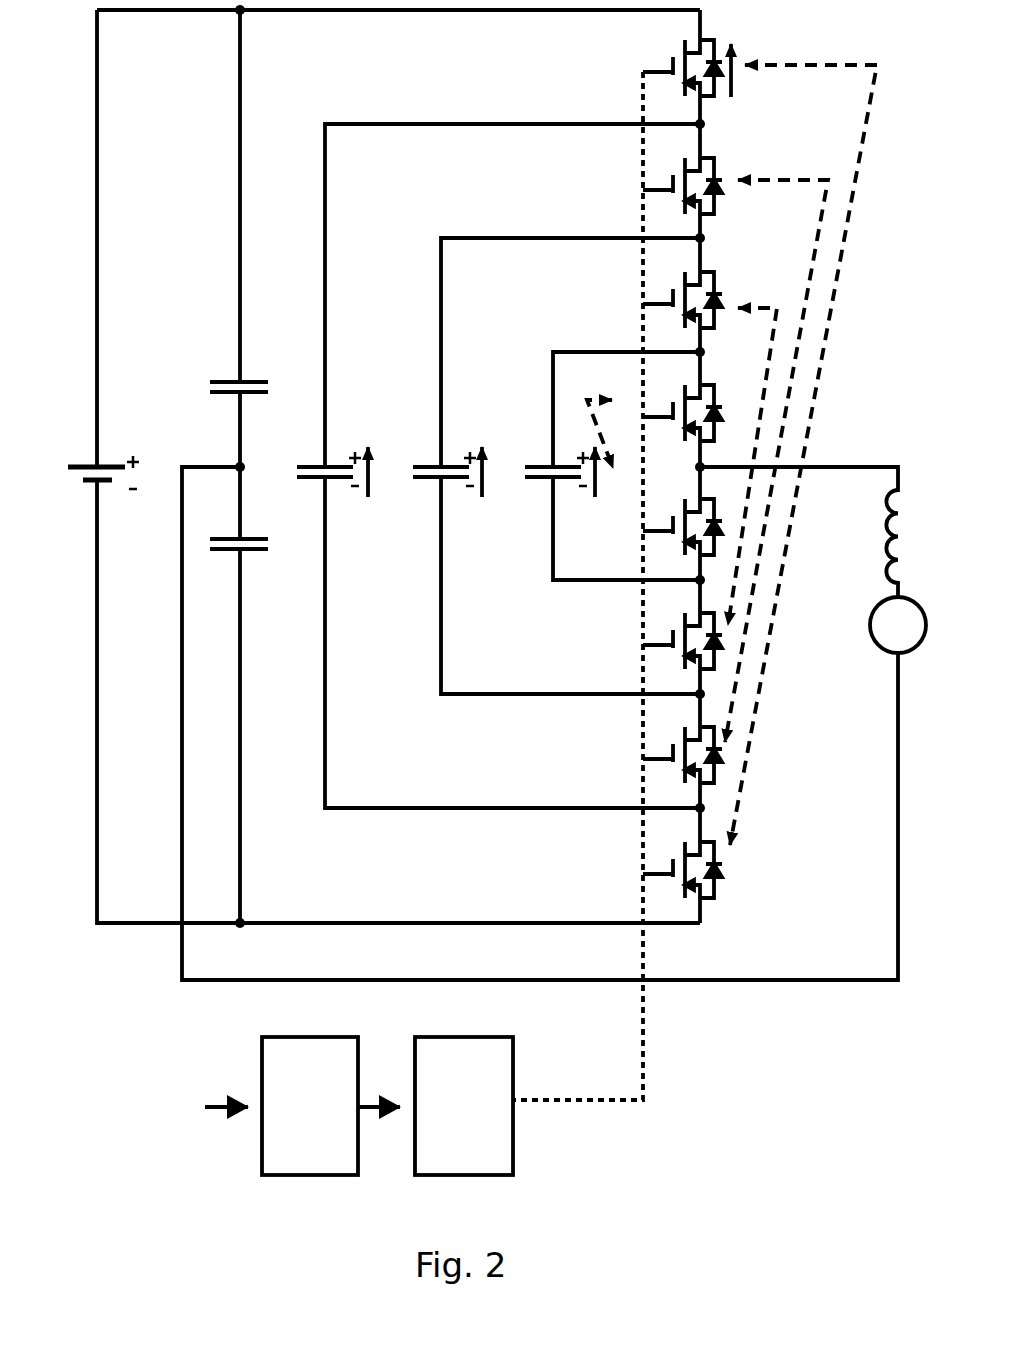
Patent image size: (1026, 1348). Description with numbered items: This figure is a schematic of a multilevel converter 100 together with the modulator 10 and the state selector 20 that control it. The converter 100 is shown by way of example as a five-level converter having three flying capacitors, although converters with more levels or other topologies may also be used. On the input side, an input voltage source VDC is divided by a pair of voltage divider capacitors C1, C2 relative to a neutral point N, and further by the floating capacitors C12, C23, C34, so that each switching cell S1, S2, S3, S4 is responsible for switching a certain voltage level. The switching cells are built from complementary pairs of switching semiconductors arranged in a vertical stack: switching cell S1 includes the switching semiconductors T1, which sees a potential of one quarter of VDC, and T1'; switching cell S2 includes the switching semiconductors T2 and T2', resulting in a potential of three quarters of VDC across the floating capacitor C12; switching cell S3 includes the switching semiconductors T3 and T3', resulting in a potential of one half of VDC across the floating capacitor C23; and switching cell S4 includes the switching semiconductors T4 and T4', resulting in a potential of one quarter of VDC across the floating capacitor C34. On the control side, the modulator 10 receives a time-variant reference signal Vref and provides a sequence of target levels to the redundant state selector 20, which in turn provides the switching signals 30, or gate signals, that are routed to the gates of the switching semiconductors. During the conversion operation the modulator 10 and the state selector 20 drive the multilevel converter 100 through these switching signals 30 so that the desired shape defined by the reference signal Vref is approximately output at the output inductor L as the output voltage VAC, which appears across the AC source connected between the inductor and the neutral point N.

The multilevel converter 100 is at (828, 1044).
The modulator 10 is at (263, 1062).
The state selector 20 is at (416, 1062).
The switching signals 30 is at (648, 1070).
The switching semiconductor T1 is at (710, 69).
The switching semiconductor T2 is at (682, 181).
The switching semiconductor T3 is at (682, 295).
The switching semiconductor T4 is at (682, 409).
The switching semiconductor T4' is at (682, 523).
The switching semiconductor T3' is at (682, 637).
The switching semiconductor T2' is at (682, 751).
The switching semiconductor T1' is at (682, 865).
The voltage divider capacitor C1 is at (233, 372).
The voltage divider capacitor C2 is at (236, 564).
The floating capacitor C12 is at (488, 466).
The floating capacitor C23 is at (546, 466).
The floating capacitor C34 is at (602, 466).
The switching cell S1 is at (822, 450).
The switching cell S2 is at (776, 447).
The switching cell S3 is at (752, 450).
The switching cell S4 is at (586, 421).
The output inductor L is at (799, 532).
The output voltage VAC is at (898, 625).
The input voltage source VDC is at (76, 472).
The neutral point N is at (229, 453).
The reference signal Vref is at (201, 1106).